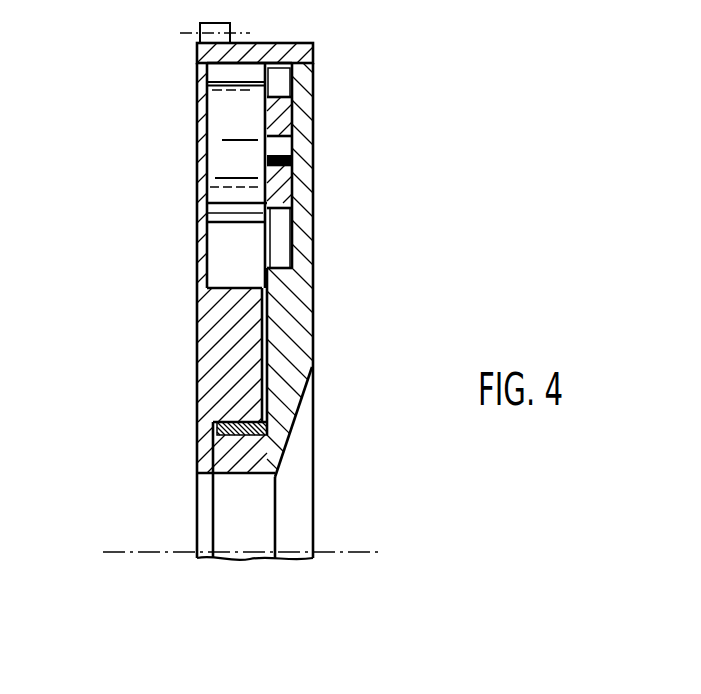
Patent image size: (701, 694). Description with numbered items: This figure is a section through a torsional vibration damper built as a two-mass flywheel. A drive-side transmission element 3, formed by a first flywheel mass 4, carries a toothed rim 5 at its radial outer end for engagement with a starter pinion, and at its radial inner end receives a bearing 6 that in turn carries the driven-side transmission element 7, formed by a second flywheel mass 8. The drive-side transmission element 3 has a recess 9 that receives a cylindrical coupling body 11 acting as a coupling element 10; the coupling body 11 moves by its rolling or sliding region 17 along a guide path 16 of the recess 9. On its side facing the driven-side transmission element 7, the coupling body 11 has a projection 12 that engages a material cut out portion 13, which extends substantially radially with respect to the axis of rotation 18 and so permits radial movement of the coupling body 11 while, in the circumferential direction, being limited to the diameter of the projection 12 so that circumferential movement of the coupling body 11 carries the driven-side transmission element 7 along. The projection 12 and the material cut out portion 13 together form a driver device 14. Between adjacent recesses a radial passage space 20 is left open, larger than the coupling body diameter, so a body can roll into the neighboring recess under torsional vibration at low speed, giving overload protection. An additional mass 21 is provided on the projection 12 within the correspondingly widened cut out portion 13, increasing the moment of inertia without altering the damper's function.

The drive-side transmission element 3 is at (197, 418).
The first flywheel mass 4 is at (216, 396).
The toothed rim 5 is at (200, 24).
The bearing 6 is at (268, 424).
The driven-side transmission element 7 is at (317, 293).
The second flywheel mass 8 is at (290, 365).
The recess 9 is at (240, 278).
The coupling element 10 is at (190, 188).
The coupling body 11 is at (233, 128).
The projection 12 is at (294, 145).
The material cut out portion 13 is at (281, 228).
The driver device 14 is at (297, 252).
The guide path 16 is at (232, 72).
The rolling or sliding region 17 is at (240, 230).
The axis of rotation 18 is at (350, 552).
The radial passage space 20 is at (228, 259).
The additional mass 21 is at (283, 119).